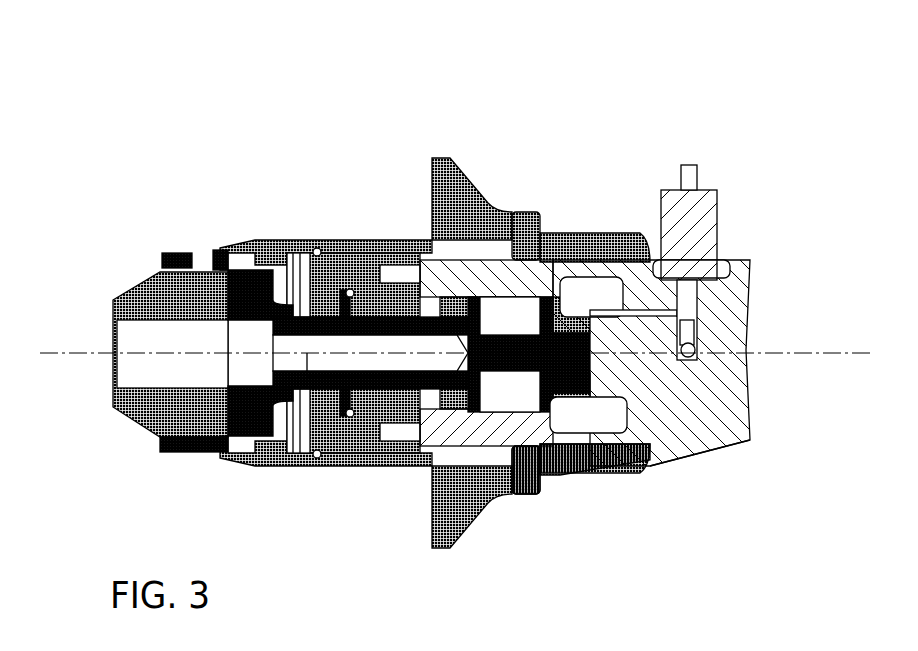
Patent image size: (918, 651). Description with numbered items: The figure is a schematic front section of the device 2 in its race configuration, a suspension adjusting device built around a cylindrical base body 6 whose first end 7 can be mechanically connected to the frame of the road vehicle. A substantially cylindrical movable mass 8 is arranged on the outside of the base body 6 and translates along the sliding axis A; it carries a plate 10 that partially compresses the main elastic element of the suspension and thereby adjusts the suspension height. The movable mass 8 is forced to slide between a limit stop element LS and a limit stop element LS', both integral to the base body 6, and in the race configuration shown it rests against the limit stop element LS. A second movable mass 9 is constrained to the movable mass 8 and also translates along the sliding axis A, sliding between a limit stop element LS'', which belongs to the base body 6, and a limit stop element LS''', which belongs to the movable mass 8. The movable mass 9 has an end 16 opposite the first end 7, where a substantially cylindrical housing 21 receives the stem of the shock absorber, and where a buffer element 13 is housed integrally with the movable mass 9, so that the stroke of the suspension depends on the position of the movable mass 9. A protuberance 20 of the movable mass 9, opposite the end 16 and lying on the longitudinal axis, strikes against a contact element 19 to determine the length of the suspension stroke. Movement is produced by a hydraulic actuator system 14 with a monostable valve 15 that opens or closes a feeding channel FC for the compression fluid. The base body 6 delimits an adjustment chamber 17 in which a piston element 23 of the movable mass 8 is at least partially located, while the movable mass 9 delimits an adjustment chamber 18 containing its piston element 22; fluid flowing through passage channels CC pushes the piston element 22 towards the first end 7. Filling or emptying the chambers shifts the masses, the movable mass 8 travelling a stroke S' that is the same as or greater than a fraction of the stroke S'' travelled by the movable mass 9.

The device 2 is at (291, 160).
The base body 6 is at (711, 450).
The first end 7 is at (780, 320).
The movable mass 8 is at (565, 235).
The movable mass 9 is at (246, 470).
The plate 10 is at (450, 158).
The buffer element 13 is at (137, 426).
The actuator system 14 is at (723, 196).
The monostable valve 15 is at (705, 222).
The end 16 is at (155, 266).
The adjustment chamber 17 is at (576, 304).
The adjustment chamber 18 is at (489, 324).
The contact element 19 is at (636, 476).
The protuberance 20 is at (569, 476).
The cylindrical housing 21 is at (245, 382).
The piston element 22 is at (460, 426).
The piston element 23 is at (345, 465).
The sliding axis A is at (50, 353).
The passage channels CC is at (395, 268).
The feeding channel FC is at (632, 318).
The limit stop element LS is at (668, 193).
The limit stop element LS' is at (320, 215).
The limit stop element LS'' is at (588, 401).
The limit stop element LS''' is at (535, 226).
The stroke S' is at (442, 140).
The stroke S'' is at (509, 544).